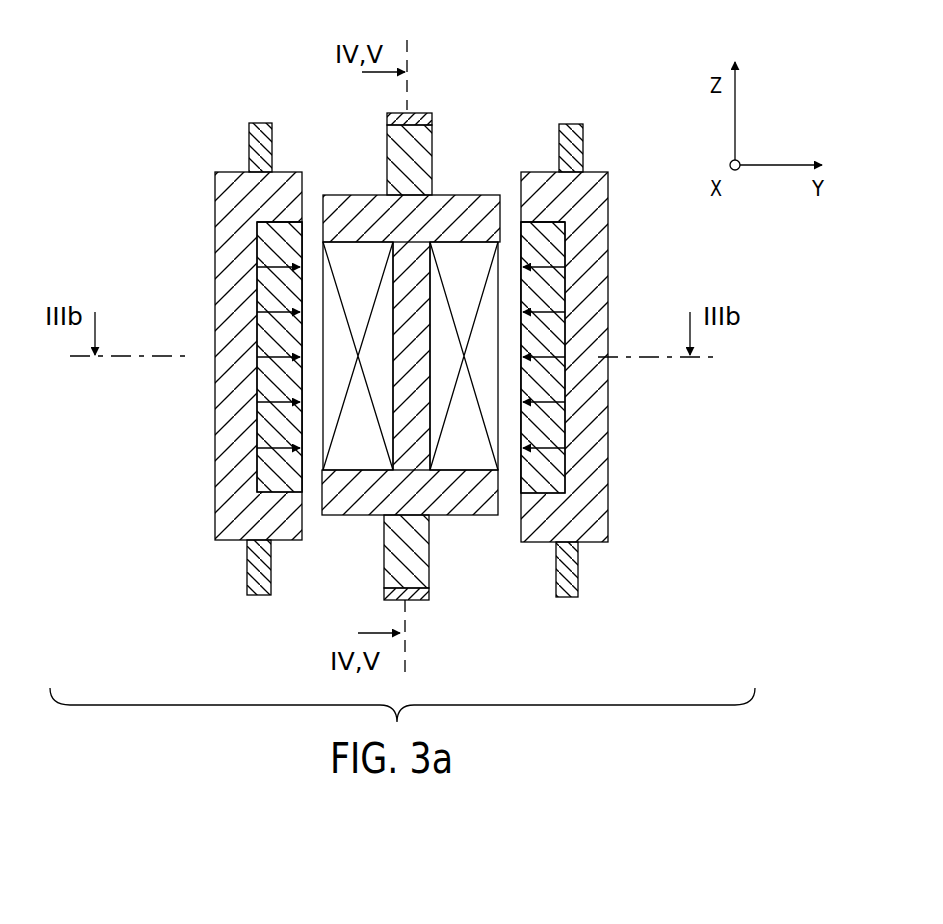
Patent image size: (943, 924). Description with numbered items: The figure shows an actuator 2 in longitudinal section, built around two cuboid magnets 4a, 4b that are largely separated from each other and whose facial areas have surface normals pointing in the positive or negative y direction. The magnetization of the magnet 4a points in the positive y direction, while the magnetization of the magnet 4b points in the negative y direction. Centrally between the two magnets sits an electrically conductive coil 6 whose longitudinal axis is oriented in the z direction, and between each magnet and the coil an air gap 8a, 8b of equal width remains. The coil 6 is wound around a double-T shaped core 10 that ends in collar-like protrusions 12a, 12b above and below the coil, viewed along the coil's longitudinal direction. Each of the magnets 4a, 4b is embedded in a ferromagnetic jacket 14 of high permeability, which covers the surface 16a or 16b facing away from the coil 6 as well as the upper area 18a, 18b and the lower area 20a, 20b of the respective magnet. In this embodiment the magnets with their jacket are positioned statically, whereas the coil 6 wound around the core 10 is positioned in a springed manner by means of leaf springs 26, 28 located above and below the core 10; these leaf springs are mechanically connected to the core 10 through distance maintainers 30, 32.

The actuator 2 is at (532, 85).
The cuboid magnet 4a is at (262, 462).
The cuboid magnet 4b is at (553, 478).
The coil 6 is at (487, 380).
The air gap 8a is at (310, 503).
The air gap 8b is at (507, 508).
The double-T shaped core 10 is at (412, 413).
The collar-like protrusion 12a is at (355, 198).
The collar-like protrusion 12b is at (358, 515).
The ferromagnetic jacket 14 is at (228, 232).
The surface facing away from the coil 16a is at (253, 410).
The surface facing away from the coil 16b is at (567, 338).
The upper area 18a is at (278, 218).
The upper area 18b is at (555, 220).
The lower area 20a is at (292, 492).
The lower area 20b is at (540, 495).
The leaf spring 26 is at (423, 113).
The leaf spring 28 is at (418, 598).
The distance maintainer 30 is at (412, 184).
The distance maintainer 32 is at (417, 562).